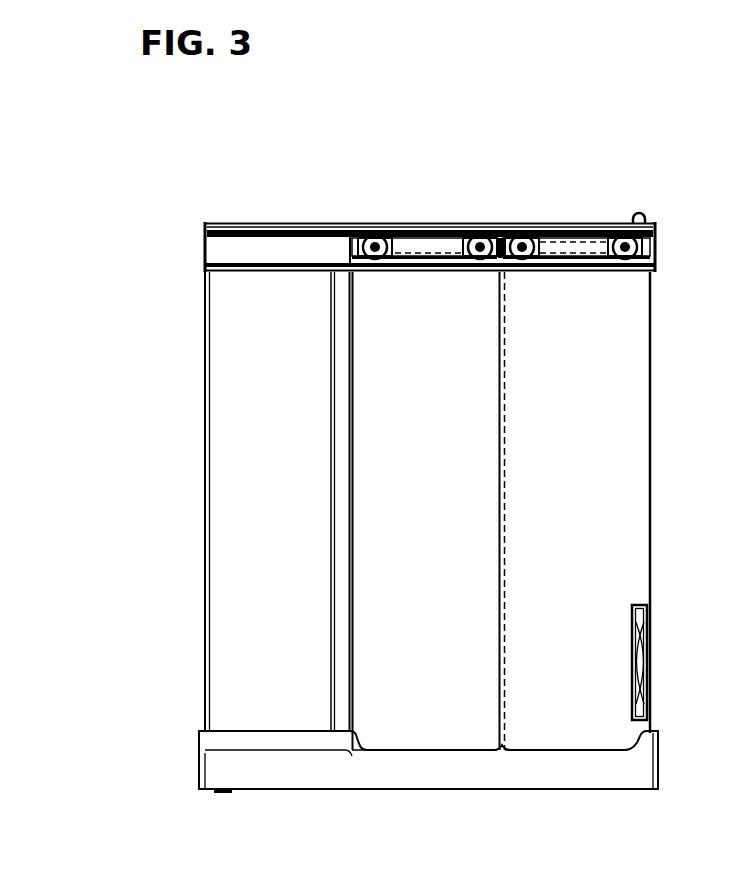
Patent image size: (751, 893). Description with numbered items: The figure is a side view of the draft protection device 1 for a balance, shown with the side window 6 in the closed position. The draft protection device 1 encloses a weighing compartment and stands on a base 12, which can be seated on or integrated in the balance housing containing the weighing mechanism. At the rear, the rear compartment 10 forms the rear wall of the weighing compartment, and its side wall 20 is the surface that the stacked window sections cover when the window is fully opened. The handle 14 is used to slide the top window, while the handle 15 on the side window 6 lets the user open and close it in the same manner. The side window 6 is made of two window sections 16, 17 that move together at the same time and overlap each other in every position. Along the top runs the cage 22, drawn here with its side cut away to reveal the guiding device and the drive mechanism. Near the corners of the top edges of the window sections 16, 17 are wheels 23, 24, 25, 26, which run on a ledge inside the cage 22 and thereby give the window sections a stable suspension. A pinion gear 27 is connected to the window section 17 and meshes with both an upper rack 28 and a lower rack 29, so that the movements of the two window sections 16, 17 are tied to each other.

The draft protection device 1 is at (178, 204).
The side window 6 is at (662, 437).
The rear compartment 10 is at (198, 473).
The base 12 is at (488, 770).
The handle 14 is at (647, 216).
The handle 15 is at (636, 633).
The window section 16 is at (590, 489).
The window section 17 is at (445, 489).
The side wall 20 is at (255, 572).
The cage 22 is at (313, 216).
The wheel 23 is at (373, 232).
The wheel 24 is at (480, 232).
The wheel 25 is at (533, 234).
The wheel 26 is at (627, 230).
The pinion gear 27 is at (506, 234).
The upper rack 28 is at (433, 233).
The lower rack 29 is at (603, 267).